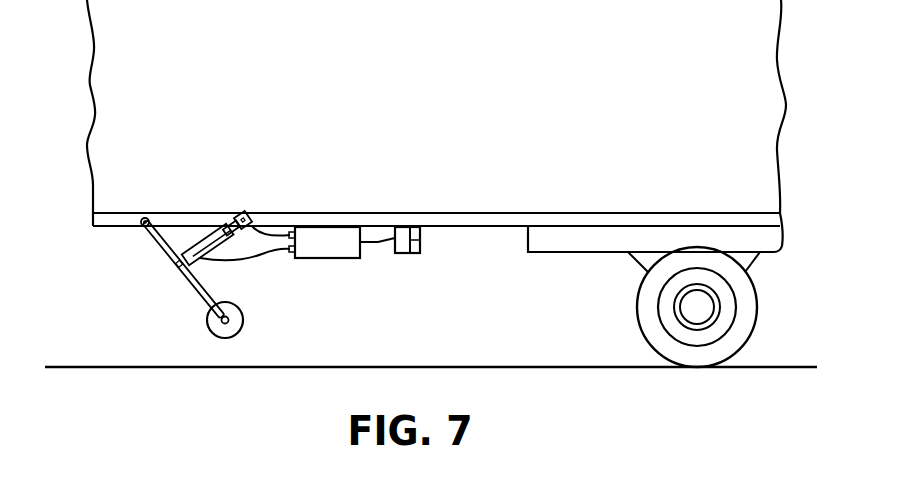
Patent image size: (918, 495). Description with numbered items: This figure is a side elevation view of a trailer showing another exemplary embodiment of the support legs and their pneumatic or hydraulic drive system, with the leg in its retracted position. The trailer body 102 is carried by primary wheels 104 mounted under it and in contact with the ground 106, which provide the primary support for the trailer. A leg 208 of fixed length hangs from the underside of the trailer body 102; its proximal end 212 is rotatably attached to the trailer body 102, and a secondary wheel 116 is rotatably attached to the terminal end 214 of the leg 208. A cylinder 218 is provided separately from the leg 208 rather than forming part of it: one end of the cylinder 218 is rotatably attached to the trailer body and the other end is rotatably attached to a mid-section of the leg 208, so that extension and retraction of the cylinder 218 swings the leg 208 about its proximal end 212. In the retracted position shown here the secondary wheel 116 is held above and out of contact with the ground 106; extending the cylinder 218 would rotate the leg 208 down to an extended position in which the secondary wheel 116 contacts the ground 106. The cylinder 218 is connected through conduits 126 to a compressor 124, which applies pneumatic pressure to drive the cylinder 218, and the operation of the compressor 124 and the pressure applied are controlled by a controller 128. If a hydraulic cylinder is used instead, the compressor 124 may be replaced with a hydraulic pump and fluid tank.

The trailer body 102 is at (698, 212).
The primary wheels 104 is at (640, 303).
The ground 106 is at (498, 365).
The secondary wheel 116 is at (207, 320).
The compressor 124 is at (333, 233).
The conduits 126 is at (267, 242).
The controller 128 is at (403, 235).
The leg 208 is at (163, 250).
The proximal end 212 is at (145, 218).
The terminal end 214 is at (229, 320).
The cylinder 218 is at (215, 244).